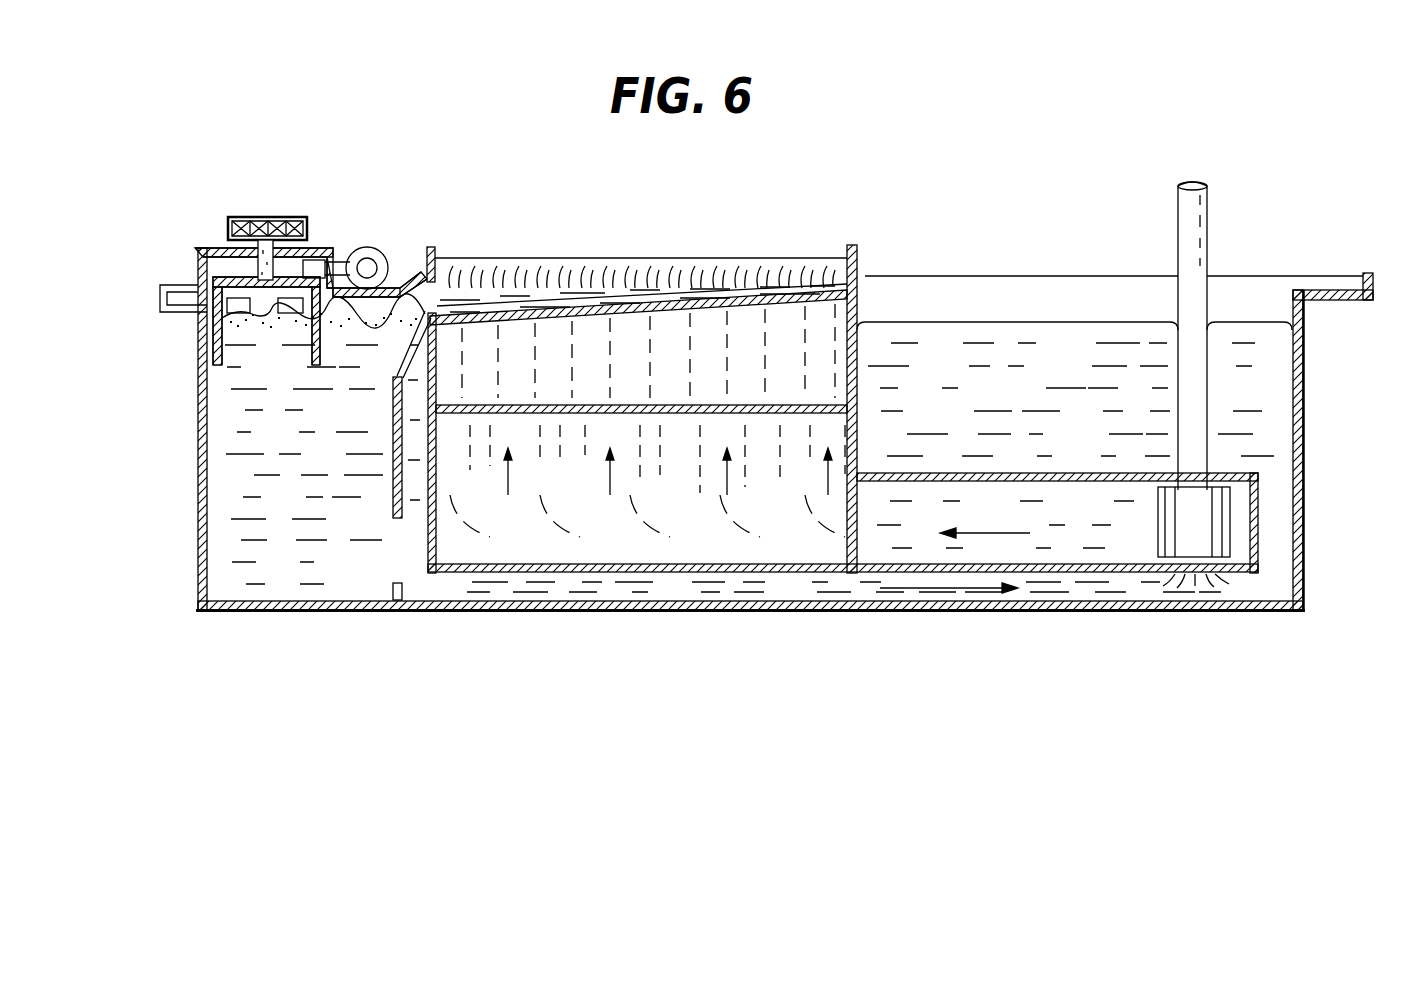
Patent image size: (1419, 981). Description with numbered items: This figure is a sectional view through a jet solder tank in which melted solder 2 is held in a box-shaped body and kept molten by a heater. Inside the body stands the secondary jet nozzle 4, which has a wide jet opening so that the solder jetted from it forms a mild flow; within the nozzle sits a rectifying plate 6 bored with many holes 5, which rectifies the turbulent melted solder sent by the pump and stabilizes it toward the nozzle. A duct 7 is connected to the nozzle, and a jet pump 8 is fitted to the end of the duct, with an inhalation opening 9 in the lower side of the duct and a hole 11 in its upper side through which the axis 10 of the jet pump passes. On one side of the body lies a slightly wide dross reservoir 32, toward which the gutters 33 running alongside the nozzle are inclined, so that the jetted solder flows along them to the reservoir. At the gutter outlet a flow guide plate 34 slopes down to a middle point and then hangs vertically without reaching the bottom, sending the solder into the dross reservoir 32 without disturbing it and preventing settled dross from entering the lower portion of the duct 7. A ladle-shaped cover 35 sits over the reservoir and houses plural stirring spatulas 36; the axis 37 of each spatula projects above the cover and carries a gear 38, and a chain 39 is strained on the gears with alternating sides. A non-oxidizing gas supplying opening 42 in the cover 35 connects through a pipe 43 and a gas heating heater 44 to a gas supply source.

The solder 2 is at (970, 335).
The secondary jet nozzle 4 is at (855, 300).
The holes 5 is at (572, 405).
The rectifying plate 6 is at (660, 405).
The duct 7 is at (1073, 478).
The jet pump 8 is at (1227, 515).
The inhalation opening 9 is at (1195, 565).
The axis 10 is at (1208, 196).
The hole 11 is at (1303, 421).
The dross reservoir 32 is at (259, 327).
The gutters 33 is at (680, 290).
The flow guide plate 34 is at (395, 470).
The cover 35 is at (227, 260).
The stirring spatulas 36 is at (222, 325).
The axis 37 is at (255, 272).
The gear 38 is at (262, 216).
The chain 39 is at (228, 229).
The non-oxidizing gas supplying opening 42 is at (317, 260).
The pipe 43 is at (347, 255).
The gas heating heater 44 is at (383, 250).